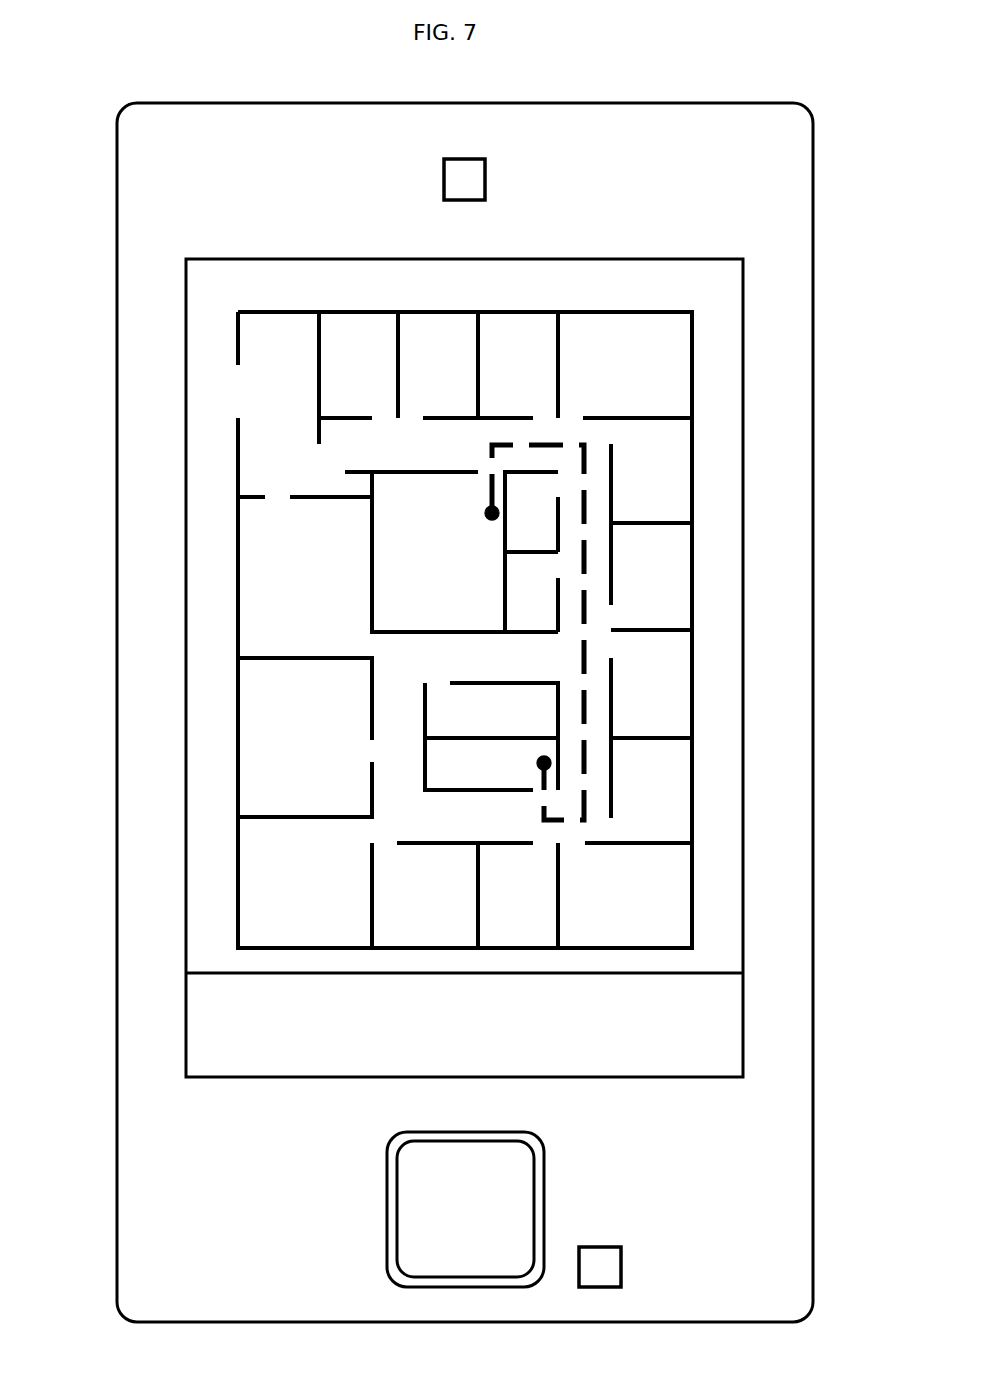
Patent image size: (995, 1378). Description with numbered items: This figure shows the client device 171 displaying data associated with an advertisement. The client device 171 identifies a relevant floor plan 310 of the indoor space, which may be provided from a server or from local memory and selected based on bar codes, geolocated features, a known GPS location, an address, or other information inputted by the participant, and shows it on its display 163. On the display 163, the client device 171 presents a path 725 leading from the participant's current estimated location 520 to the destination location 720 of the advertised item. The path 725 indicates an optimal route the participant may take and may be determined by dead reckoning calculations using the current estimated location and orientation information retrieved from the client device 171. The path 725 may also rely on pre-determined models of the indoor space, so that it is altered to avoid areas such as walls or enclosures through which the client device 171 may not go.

The client device 171 is at (117, 119).
The display 163 is at (186, 301).
The floor plan 310 is at (238, 605).
The current location 520 is at (492, 513).
The path 725 is at (587, 604).
The destination location 720 is at (544, 763).